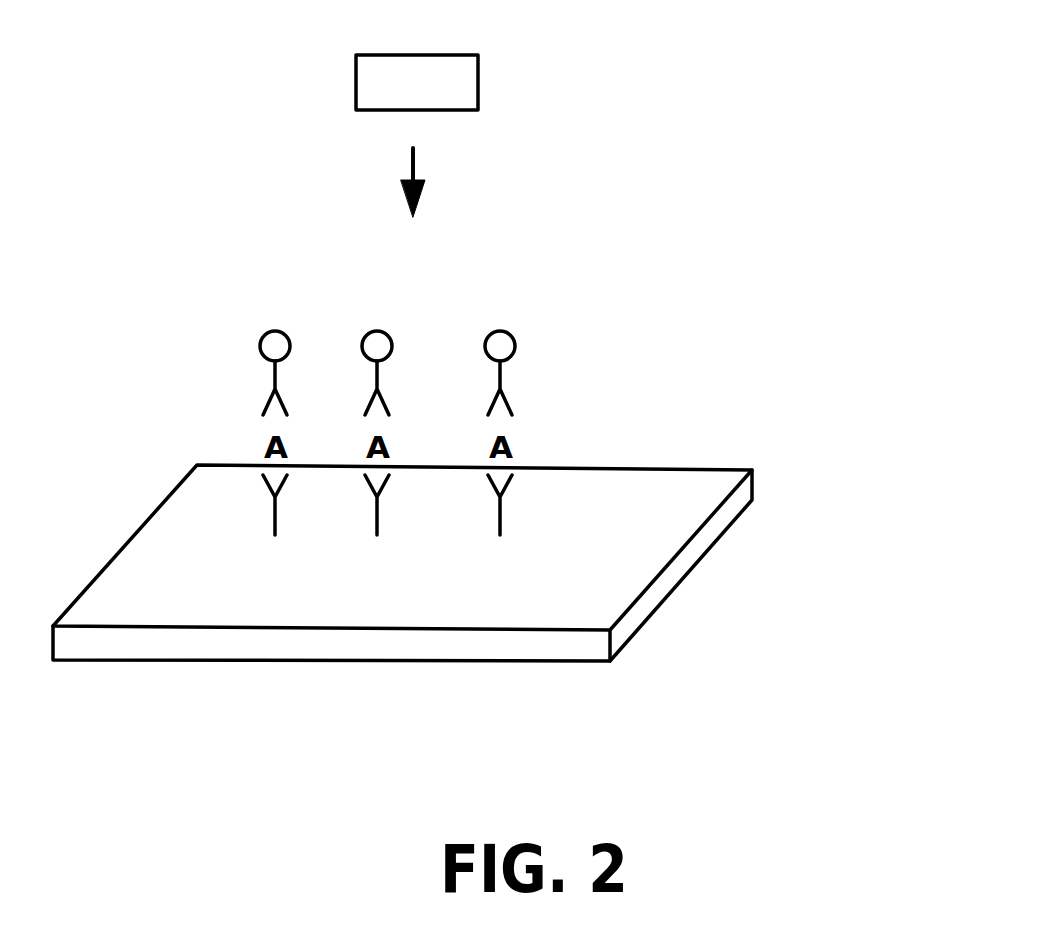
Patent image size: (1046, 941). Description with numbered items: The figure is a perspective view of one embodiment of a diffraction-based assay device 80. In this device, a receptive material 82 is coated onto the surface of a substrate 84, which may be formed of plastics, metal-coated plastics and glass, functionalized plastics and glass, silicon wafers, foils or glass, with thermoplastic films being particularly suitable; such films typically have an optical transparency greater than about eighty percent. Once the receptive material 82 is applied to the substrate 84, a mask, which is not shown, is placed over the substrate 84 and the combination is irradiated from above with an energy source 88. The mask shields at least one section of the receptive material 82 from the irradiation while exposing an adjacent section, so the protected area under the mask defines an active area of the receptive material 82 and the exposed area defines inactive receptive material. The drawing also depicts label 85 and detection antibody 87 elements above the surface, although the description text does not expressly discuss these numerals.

The diffraction-based assay device 80 is at (855, 442).
The receptive material 82 is at (272, 520).
The substrate 84 is at (663, 583).
The label 85 is at (512, 336).
The detection antibody 87 is at (512, 410).
The energy source 88 is at (478, 55).